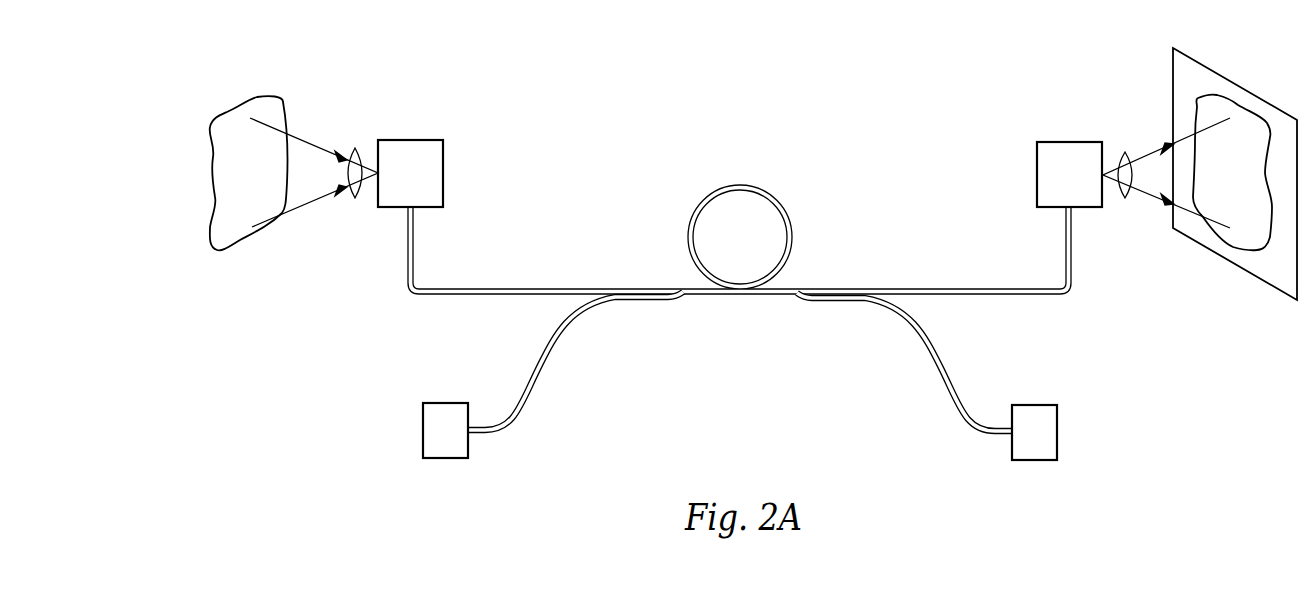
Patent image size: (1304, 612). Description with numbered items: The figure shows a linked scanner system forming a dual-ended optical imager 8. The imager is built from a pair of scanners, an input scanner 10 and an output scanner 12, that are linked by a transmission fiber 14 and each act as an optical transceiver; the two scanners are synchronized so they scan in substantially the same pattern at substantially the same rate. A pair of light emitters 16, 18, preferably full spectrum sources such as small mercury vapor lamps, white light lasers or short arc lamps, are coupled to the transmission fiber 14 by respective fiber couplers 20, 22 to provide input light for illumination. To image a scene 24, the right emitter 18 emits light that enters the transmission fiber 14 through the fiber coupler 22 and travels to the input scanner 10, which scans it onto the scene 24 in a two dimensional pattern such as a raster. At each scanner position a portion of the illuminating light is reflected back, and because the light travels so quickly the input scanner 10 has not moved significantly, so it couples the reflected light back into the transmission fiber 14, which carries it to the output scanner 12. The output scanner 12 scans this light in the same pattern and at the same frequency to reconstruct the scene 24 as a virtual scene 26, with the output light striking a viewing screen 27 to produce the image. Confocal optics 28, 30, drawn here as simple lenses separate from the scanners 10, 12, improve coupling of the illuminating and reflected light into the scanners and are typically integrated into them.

The dual-ended optical imager 8 is at (586, 484).
The input scanner 10 is at (413, 140).
The output scanner 12 is at (1058, 142).
The transmission fiber 14 is at (913, 288).
The light emitter 16 is at (440, 403).
The light emitter 18 is at (1040, 405).
The fiber coupler 20 is at (598, 308).
The fiber coupler 22 is at (886, 313).
The scene 24 is at (232, 125).
The virtual scene 26 is at (1250, 120).
The viewing screen 27 is at (1279, 272).
The confocal optics 28 is at (355, 150).
The confocal optics 30 is at (1124, 152).